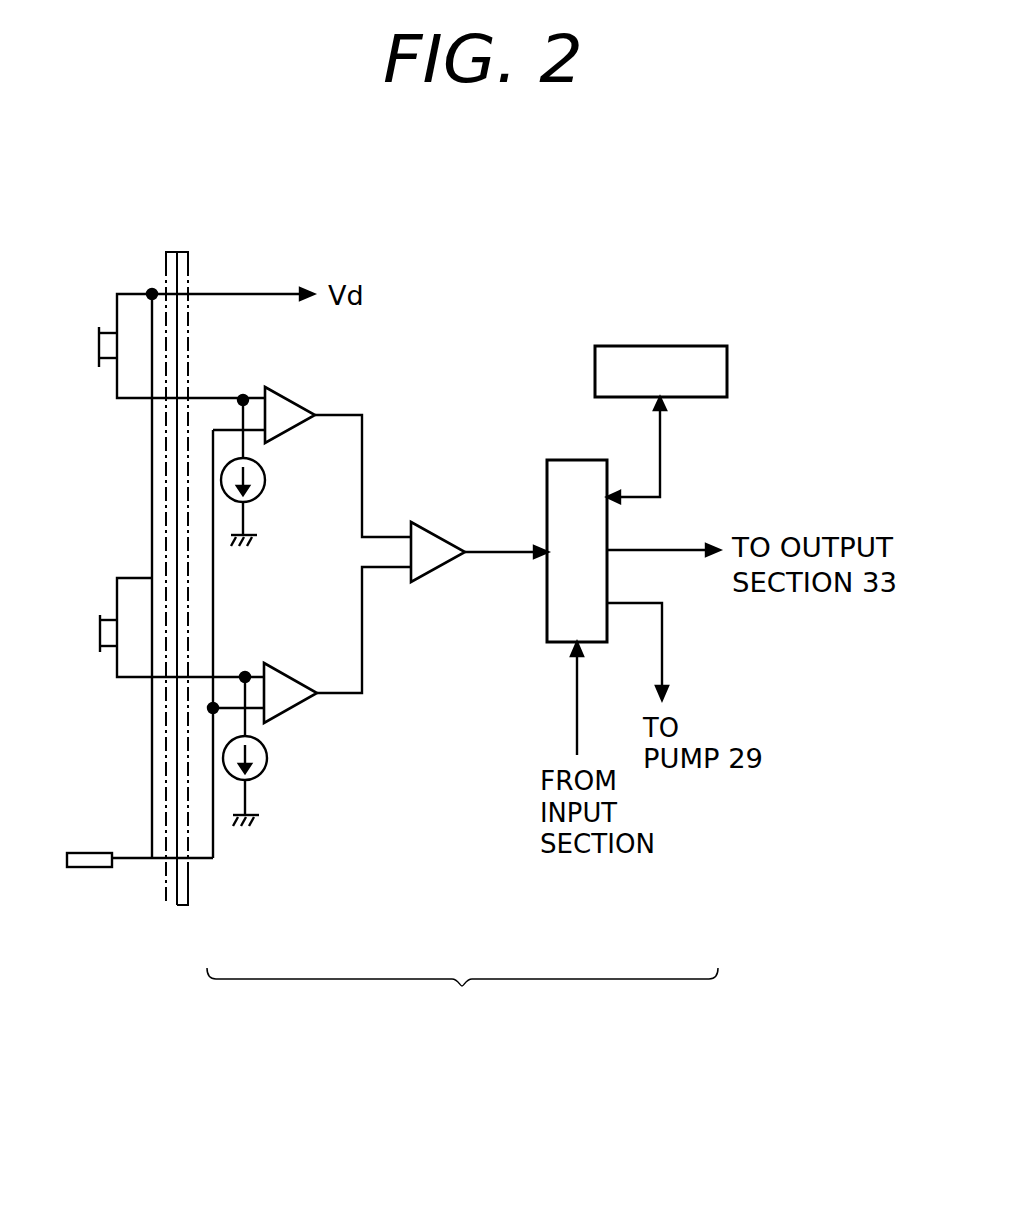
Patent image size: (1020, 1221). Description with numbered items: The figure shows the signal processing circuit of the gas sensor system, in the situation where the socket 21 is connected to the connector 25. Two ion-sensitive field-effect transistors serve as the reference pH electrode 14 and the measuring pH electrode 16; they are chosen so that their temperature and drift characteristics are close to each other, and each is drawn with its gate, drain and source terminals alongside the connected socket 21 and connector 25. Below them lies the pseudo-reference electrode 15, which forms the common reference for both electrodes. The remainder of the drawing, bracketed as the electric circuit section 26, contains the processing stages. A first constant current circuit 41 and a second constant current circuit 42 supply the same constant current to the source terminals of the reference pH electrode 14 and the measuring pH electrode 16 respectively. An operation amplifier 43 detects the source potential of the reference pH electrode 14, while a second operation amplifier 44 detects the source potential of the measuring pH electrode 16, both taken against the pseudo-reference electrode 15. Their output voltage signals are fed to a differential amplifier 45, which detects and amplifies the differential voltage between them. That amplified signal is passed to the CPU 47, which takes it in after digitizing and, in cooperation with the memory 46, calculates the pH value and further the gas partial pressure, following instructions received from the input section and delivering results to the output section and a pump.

The reference pH electrode 14 is at (108, 313).
The pseudo-reference electrode 15 is at (100, 868).
The measuring pH electrode 16 is at (108, 605).
The socket 21 is at (166, 252).
The connector 25 is at (188, 252).
The electric circuit section 26 is at (462, 998).
The constant current circuit 41 is at (266, 481).
The constant current circuit 42 is at (266, 770).
The operation amplifier 43 is at (293, 398).
The operation amplifier 44 is at (290, 712).
The differential amplifier 45 is at (430, 522).
The memory 46 is at (672, 346).
The CPU 47 is at (575, 460).